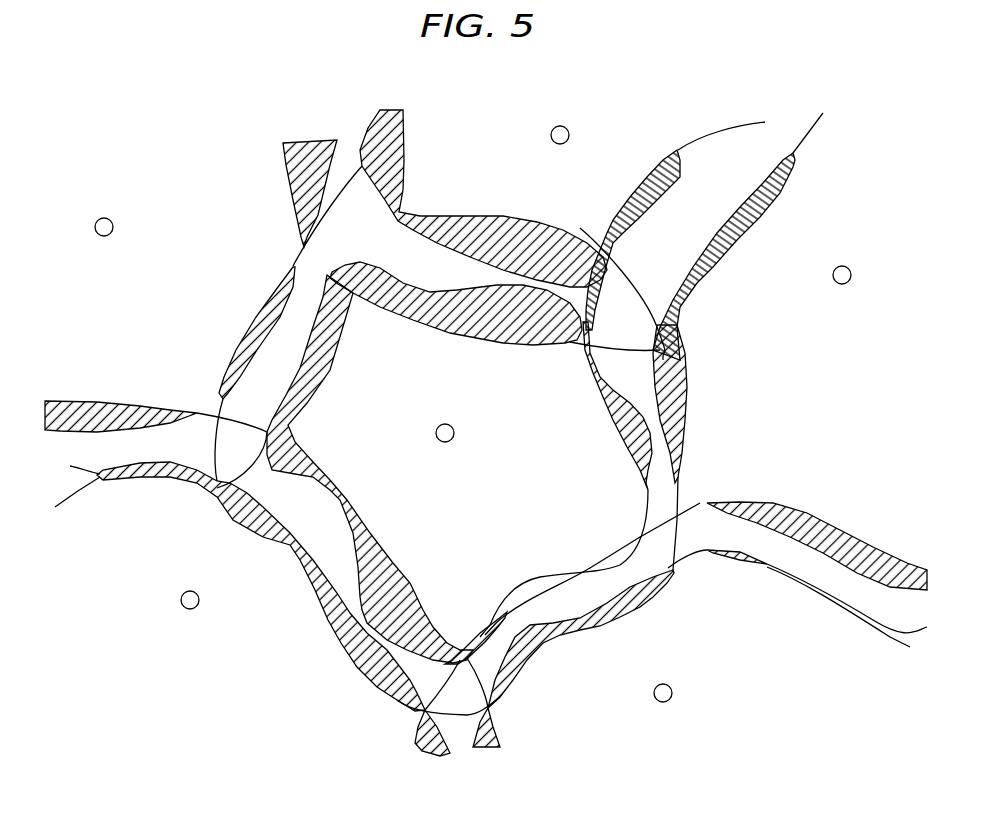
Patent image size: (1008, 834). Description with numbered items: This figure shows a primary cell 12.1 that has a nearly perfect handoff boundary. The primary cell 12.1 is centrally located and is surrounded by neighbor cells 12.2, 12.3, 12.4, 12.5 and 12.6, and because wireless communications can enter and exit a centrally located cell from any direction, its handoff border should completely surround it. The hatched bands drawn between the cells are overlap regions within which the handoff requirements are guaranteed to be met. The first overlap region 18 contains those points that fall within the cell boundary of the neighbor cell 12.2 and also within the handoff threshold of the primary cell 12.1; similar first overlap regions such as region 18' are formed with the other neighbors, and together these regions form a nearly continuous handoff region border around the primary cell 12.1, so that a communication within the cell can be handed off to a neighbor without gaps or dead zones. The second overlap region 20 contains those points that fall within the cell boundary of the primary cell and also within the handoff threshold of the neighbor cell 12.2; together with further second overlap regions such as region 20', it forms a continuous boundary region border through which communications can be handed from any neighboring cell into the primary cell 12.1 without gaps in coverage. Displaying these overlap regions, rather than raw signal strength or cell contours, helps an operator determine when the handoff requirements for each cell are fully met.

The primary cell 12.1 is at (446, 424).
The neighbor cell 12.2 is at (661, 684).
The neighbor cell 12.3 is at (841, 266).
The neighbor cell 12.4 is at (559, 126).
The neighbor cell 12.5 is at (103, 218).
The neighbor cell 12.6 is at (189, 591).
The first overlap region 18 is at (573, 658).
The handoff region border portion 18' is at (562, 340).
The second overlap region 20 is at (475, 630).
The boundary region border portion 20' is at (625, 353).